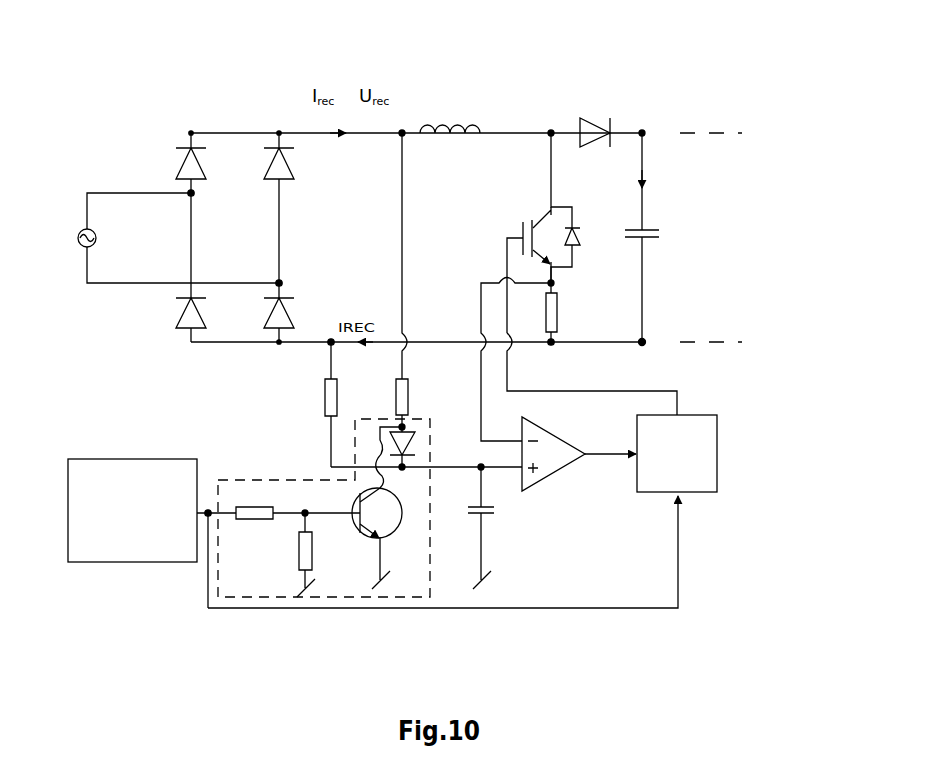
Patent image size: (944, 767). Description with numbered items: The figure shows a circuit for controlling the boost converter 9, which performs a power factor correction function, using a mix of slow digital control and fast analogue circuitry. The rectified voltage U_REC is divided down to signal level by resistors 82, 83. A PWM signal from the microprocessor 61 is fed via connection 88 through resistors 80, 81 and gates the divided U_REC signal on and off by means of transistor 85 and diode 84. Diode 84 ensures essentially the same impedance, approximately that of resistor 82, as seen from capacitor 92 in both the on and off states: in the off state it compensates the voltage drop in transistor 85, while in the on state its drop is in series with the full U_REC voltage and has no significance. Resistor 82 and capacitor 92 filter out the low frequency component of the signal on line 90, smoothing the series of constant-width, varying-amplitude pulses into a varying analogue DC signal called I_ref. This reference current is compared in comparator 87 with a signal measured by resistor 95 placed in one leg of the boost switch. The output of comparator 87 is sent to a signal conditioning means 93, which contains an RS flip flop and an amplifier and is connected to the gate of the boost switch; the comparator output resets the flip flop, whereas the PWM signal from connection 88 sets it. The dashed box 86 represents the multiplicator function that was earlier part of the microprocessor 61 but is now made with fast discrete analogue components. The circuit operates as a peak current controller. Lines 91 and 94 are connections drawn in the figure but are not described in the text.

The boost converter 9 is at (506, 94).
The microprocessor 61 is at (132, 510).
The resistor 80 is at (265, 519).
The resistor 81 is at (326, 553).
The resistor 82 is at (325, 400).
The resistor 83 is at (397, 400).
The diode 84 is at (418, 438).
The transistor 85 is at (401, 524).
The box 86 is at (290, 480).
The comparator 87 is at (565, 472).
The connection 88 is at (208, 505).
The line 90 is at (470, 467).
The actual current line 91 is at (481, 412).
The capacitor 92 is at (497, 508).
The signal conditioning means 93 is at (677, 453).
The feedback line 94 is at (679, 590).
The resistor 95 is at (558, 303).